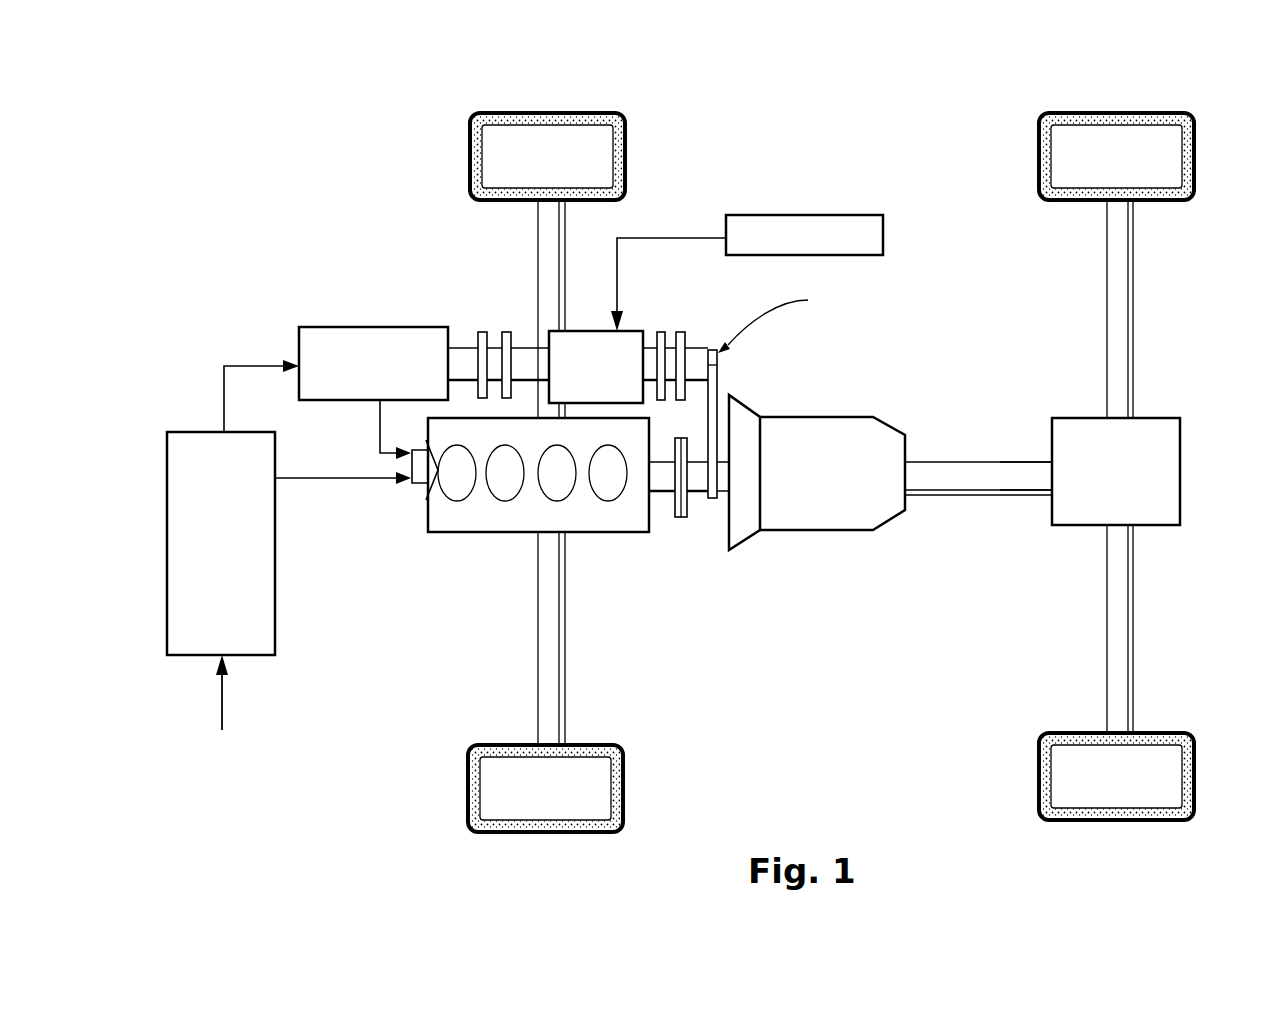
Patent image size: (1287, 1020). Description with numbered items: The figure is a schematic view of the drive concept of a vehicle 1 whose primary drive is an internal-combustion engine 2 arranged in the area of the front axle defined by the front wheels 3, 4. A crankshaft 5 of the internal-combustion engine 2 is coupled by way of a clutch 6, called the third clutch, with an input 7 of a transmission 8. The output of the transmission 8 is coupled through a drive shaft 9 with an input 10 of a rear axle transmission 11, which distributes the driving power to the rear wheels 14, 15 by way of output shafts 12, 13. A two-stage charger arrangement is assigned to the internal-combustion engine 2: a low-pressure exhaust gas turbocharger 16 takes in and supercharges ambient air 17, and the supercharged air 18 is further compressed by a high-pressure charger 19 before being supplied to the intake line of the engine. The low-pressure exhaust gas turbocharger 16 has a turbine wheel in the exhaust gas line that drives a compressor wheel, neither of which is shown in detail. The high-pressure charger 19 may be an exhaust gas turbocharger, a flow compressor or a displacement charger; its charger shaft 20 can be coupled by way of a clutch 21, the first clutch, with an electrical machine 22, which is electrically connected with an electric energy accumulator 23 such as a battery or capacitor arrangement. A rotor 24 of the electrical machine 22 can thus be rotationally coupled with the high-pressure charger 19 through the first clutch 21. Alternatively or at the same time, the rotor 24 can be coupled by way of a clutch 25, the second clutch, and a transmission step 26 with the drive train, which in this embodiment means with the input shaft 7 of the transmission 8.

The vehicle 1 is at (845, 150).
The internal-combustion engine 2 is at (453, 533).
The front wheel 3 is at (625, 150).
The front wheel 4 is at (622, 783).
The crankshaft 5 is at (650, 512).
The clutch 6 is at (690, 507).
The input 7 is at (748, 533).
The transmission 8 is at (830, 528).
The drive shaft 9 is at (925, 500).
The input 10 is at (1040, 483).
The rear axle transmission 11 is at (1172, 445).
The output shaft 12 is at (1128, 638).
The output shaft 13 is at (1128, 330).
The rear wheel 14 is at (1193, 773).
The rear wheel 15 is at (1193, 155).
The low-pressure exhaust gas turbocharger 16 is at (182, 437).
The ambient air 17 is at (224, 695).
The supercharged air 18 is at (222, 375).
The high-pressure charger 19 is at (312, 330).
The charger shaft 20 is at (465, 380).
The clutch 21 is at (477, 335).
The electrical machine 22 is at (577, 326).
The electric energy accumulator 23 is at (743, 215).
The rotor 24 is at (648, 385).
The clutch 25 is at (670, 340).
The transmission step 26 is at (724, 383).